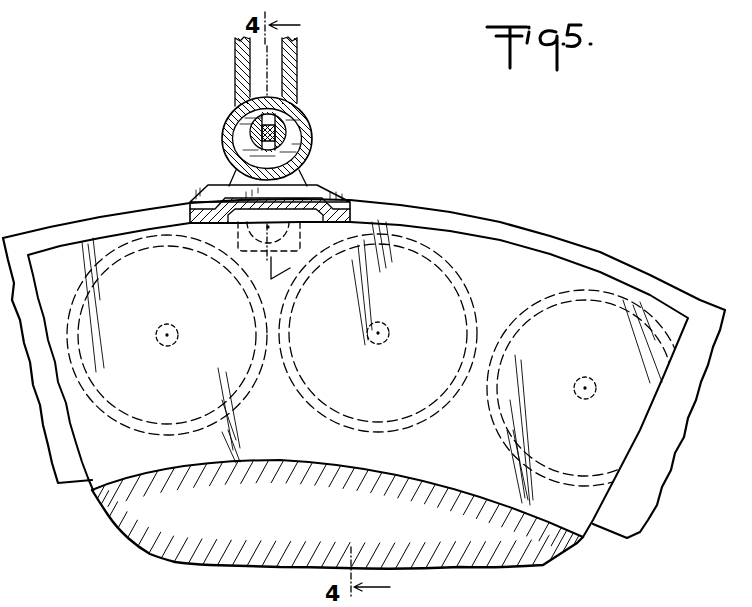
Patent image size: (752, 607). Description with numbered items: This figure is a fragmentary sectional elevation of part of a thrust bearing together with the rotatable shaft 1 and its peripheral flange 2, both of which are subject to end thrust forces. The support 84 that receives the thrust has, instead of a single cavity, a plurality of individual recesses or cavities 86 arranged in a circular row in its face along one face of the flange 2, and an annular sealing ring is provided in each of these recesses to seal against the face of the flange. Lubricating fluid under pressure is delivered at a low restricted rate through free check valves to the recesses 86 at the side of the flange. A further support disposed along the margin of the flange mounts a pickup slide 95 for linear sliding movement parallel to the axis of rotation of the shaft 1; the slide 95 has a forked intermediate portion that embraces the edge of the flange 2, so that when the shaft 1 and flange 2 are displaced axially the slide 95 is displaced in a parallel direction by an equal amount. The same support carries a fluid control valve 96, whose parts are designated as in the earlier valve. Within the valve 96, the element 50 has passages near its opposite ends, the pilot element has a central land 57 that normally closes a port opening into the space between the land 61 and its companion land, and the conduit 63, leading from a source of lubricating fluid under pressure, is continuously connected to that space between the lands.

The rotatable shaft 1 is at (331, 536).
The peripheral flange 2 is at (512, 260).
The element 50 is at (248, 131).
The central land 57 is at (270, 133).
The land 61 is at (243, 152).
The conduit 63 is at (276, 78).
The support 84 is at (690, 306).
The recesses or cavities 86 is at (306, 406).
The pickup slide 95 is at (330, 190).
The fluid control valve 96 is at (271, 112).